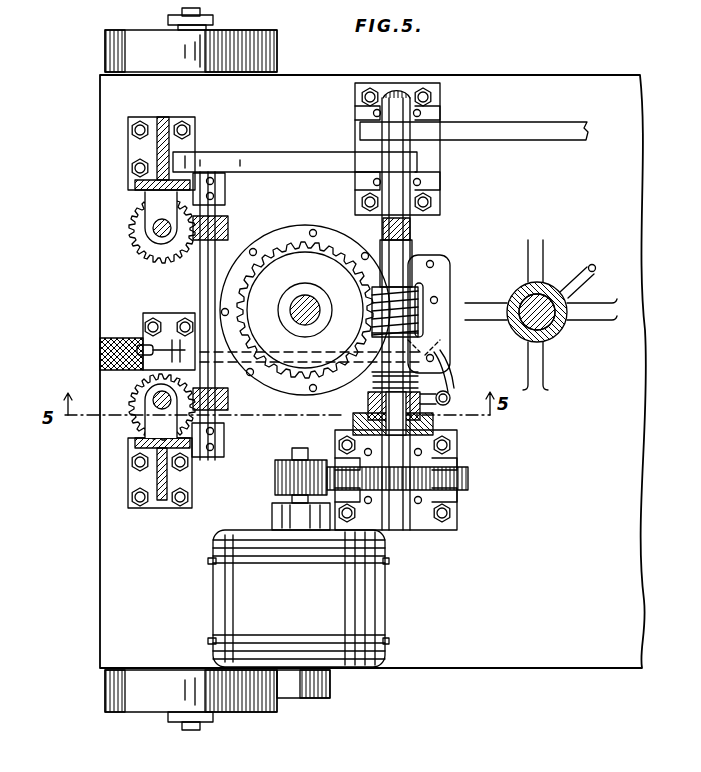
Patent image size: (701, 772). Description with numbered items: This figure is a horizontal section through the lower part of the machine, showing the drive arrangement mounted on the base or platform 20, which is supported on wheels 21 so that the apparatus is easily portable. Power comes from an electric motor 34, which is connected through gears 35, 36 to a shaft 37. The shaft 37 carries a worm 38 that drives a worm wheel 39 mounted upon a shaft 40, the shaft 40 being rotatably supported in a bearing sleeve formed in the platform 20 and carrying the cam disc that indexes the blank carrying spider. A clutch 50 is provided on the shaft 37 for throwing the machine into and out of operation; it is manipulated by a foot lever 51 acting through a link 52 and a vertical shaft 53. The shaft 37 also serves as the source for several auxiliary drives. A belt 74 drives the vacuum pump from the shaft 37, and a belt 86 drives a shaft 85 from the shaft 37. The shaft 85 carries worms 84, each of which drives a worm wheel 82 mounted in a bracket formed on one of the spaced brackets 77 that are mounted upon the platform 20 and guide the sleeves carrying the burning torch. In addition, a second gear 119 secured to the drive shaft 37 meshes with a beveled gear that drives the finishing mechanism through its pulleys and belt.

The base or platform 20 is at (100, 108).
The wheels 21 is at (105, 50).
The electric motor 34 is at (385, 603).
The gear 35 is at (275, 478).
The gear 36 is at (468, 478).
The shaft 37 is at (396, 524).
The worm 38 is at (418, 297).
The worm wheel 39 is at (315, 268).
The shaft 40 is at (305, 330).
The clutch 50 is at (440, 422).
The foot lever 51 is at (100, 350).
The link 52 is at (446, 330).
The vertical shaft 53 is at (448, 370).
The belt 74 is at (508, 124).
The brackets 77 is at (152, 122).
The worm wheel 82 is at (128, 232).
The worm 84 is at (230, 220).
The shaft 85 is at (200, 286).
The belt 86 is at (296, 153).
The gear 119 is at (410, 88).